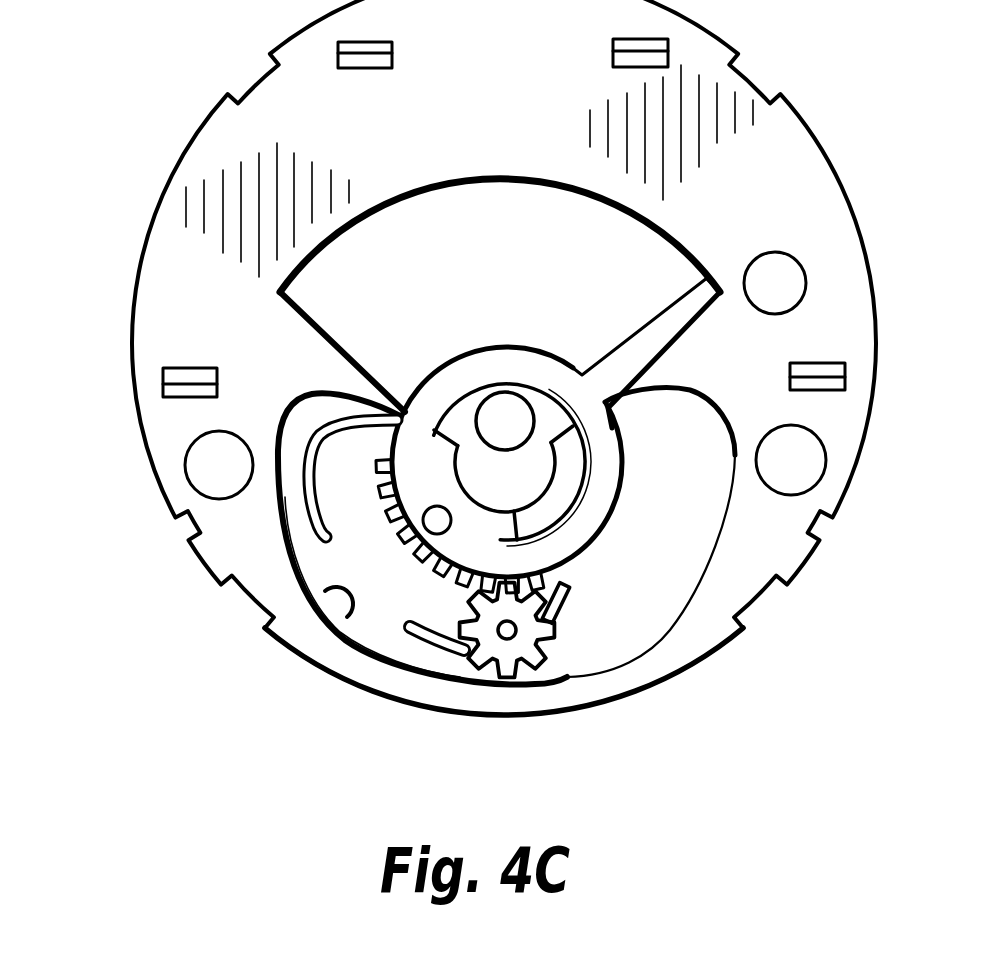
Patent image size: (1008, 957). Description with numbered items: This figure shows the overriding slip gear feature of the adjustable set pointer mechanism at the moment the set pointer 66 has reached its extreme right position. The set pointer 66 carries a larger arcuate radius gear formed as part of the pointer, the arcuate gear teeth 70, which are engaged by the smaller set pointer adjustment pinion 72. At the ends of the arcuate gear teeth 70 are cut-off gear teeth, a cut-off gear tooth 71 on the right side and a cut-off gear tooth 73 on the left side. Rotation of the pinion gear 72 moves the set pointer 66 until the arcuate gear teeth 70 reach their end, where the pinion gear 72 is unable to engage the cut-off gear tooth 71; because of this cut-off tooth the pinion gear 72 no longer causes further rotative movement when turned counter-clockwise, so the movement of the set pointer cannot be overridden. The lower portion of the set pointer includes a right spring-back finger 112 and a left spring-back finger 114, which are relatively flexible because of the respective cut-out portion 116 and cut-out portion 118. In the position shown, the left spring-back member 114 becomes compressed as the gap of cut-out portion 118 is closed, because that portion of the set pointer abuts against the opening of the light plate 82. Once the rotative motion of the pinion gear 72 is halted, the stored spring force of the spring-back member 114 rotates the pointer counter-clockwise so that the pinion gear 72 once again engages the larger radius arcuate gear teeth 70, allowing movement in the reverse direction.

The set pointer 66 is at (675, 310).
The arcuate gear teeth 70 is at (415, 562).
The cut-off gear tooth 71 is at (470, 636).
The set pointer adjustment pinion 72 is at (537, 648).
The cut-off gear tooth 73 is at (370, 458).
The light plate 82 is at (505, 70).
The right spring-back finger 112 is at (567, 597).
The left spring-back finger 114 is at (360, 410).
The cut-out portion 116 is at (542, 585).
The cut-out portion 118 is at (372, 458).